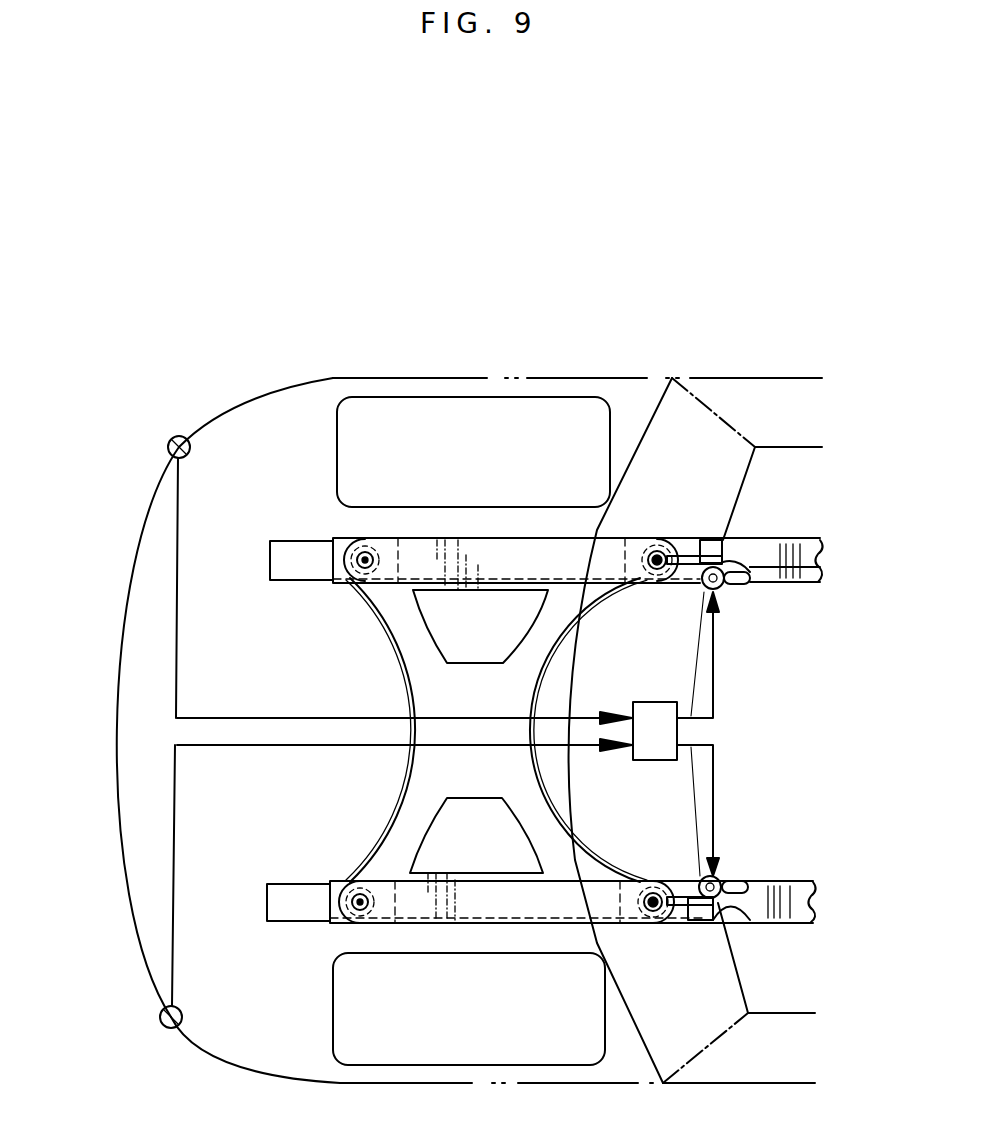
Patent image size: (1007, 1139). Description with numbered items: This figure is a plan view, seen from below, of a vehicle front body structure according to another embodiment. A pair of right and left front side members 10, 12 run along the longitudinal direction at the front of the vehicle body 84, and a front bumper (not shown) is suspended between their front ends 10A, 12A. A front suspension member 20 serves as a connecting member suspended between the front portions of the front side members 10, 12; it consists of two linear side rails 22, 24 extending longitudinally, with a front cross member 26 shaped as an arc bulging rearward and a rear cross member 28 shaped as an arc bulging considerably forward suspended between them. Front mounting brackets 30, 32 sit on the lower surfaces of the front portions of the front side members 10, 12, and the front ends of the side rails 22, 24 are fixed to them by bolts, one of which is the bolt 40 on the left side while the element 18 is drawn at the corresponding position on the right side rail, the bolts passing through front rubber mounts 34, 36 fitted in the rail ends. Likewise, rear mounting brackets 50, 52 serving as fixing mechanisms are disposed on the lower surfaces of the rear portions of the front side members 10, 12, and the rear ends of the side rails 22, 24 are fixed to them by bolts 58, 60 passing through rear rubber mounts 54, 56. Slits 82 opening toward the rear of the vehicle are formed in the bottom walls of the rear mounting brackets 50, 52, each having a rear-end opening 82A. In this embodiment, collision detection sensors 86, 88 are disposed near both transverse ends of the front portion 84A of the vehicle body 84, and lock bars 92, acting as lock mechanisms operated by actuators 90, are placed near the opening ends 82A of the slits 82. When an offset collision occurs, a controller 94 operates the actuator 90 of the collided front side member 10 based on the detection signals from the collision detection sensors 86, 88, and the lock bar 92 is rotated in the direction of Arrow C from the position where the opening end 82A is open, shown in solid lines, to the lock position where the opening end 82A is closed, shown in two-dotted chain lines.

The front side member 10 is at (549, 549).
The front end of front side member 10A is at (270, 560).
The front side member 12 is at (546, 899).
The front end of front side member 12A is at (267, 903).
The pivot shaft 18 is at (402, 520).
The front suspension member 20 is at (472, 730).
The side rail 22 is at (516, 562).
The side rail 24 is at (485, 924).
The front cross member 26 is at (413, 637).
The rear cross member 28 is at (557, 628).
The front mounting bracket 30 is at (346, 595).
The front mounting bracket 32 is at (340, 866).
The front rubber mount 34 is at (380, 560).
The front rubber mount 36 is at (378, 922).
The bolt 40 is at (390, 945).
The rear mounting bracket 50 is at (710, 525).
The rear mounting bracket 52 is at (708, 938).
The rear rubber mount 54 is at (646, 548).
The rear rubber mount 56 is at (640, 912).
The bolt 58 is at (657, 540).
The bolt 60 is at (653, 924).
The slit 82 is at (700, 553).
The rear-end opening of slit 82A is at (751, 574).
The vehicle body 84 is at (420, 682).
The front portion of vehicle body 84A is at (123, 686).
The collision detection sensor 86 is at (168, 445).
The collision detection sensor 88 is at (165, 1028).
The actuator 90 is at (706, 590).
The lock bar 92 is at (732, 538).
The controller 94 is at (658, 761).
The Arrow C direction C is at (740, 547).